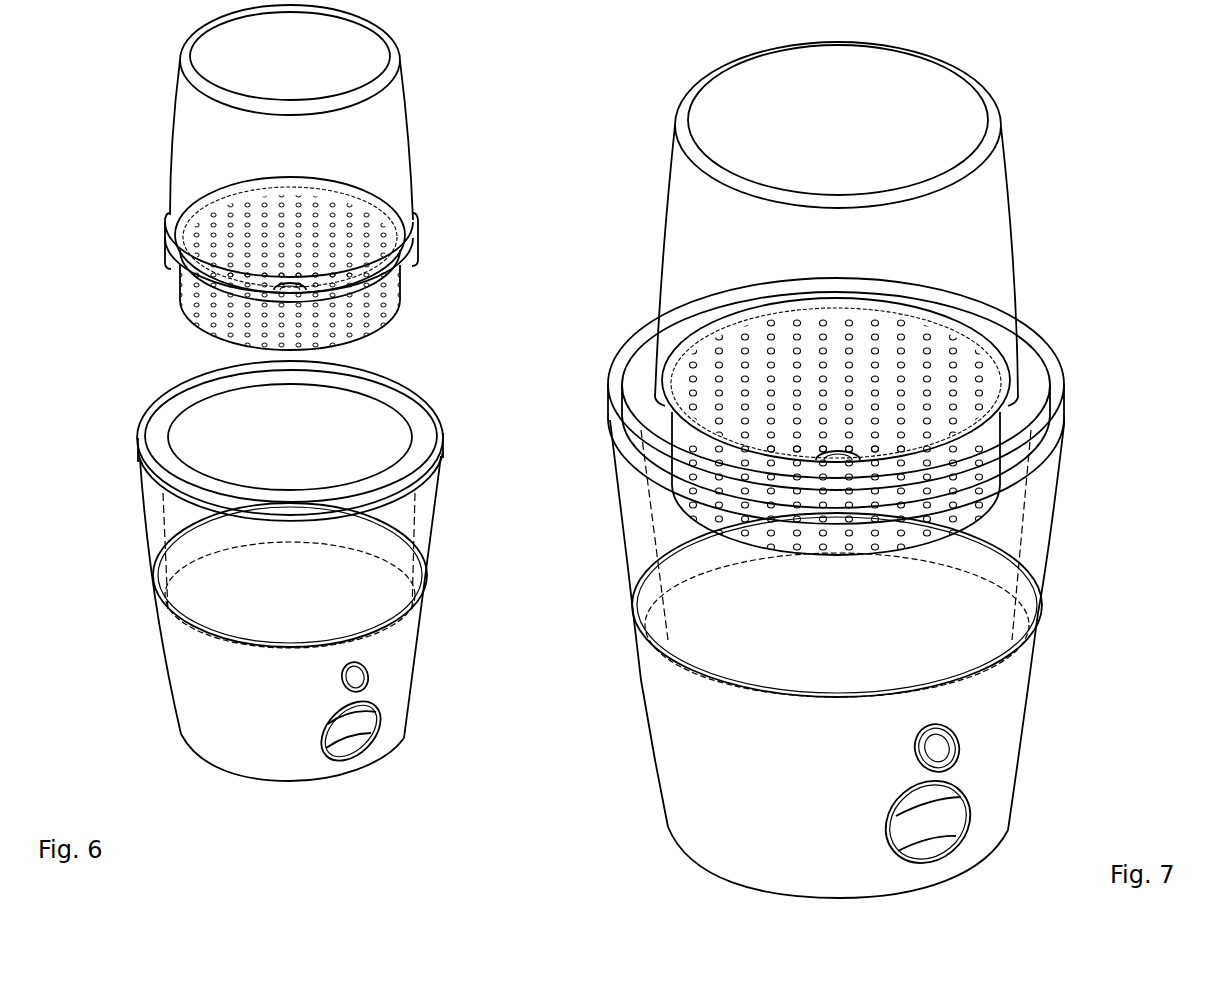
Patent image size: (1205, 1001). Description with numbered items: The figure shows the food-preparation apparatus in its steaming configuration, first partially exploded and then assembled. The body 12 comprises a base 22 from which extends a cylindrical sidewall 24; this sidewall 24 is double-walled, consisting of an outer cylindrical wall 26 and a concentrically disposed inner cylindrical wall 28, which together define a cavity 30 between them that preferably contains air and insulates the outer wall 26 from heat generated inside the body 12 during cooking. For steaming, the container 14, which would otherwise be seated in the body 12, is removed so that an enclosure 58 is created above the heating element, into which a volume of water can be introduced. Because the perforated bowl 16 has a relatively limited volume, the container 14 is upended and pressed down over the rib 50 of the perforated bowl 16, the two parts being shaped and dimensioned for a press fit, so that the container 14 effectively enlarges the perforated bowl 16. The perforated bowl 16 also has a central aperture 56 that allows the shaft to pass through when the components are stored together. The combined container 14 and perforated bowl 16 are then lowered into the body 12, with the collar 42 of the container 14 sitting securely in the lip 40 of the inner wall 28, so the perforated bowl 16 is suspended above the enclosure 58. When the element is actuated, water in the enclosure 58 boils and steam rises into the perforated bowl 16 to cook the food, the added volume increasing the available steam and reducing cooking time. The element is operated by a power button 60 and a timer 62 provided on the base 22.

In FIG. 6, the body 12 is at (306, 571).
In FIG. 7, the body 12 is at (850, 588).
In FIG. 6, the container 14 is at (403, 137).
In FIG. 7, the container 14 is at (1008, 172).
In FIG. 6, the perforated bowl 16 is at (200, 312).
In FIG. 7, the perforated bowl 16 is at (836, 483).
In FIG. 6, the base 22 is at (185, 713).
In FIG. 7, the base 22 is at (1010, 753).
In FIG. 6, the cylindrical sidewall 24 is at (445, 524).
In FIG. 7, the cylindrical sidewall 24 is at (1070, 497).
In FIG. 6, the outer cylindrical wall 26 is at (142, 490).
In FIG. 7, the outer cylindrical wall 26 is at (1062, 465).
In FIG. 6, the inner cylindrical wall 28 is at (170, 568).
In FIG. 7, the inner cylindrical wall 28 is at (1017, 585).
In FIG. 6, the cavity 30 is at (156, 531).
In FIG. 7, the cavity 30 is at (1040, 545).
In FIG. 6, the lip 40 is at (407, 457).
In FIG. 6, the collar 42 is at (408, 240).
In FIG. 7, the collar 42 is at (652, 372).
In FIG. 6, the rib 50 is at (237, 183).
In FIG. 7, the rib 50 is at (988, 337).
In FIG. 6, the central aperture 56 is at (287, 282).
In FIG. 7, the central aperture 56 is at (841, 450).
In FIG. 6, the enclosure 58 is at (298, 624).
In FIG. 7, the enclosure 58 is at (823, 670).
In FIG. 6, the power button 60 is at (345, 678).
In FIG. 7, the power button 60 is at (920, 747).
In FIG. 6, the timer 62 is at (328, 732).
In FIG. 7, the timer 62 is at (900, 833).